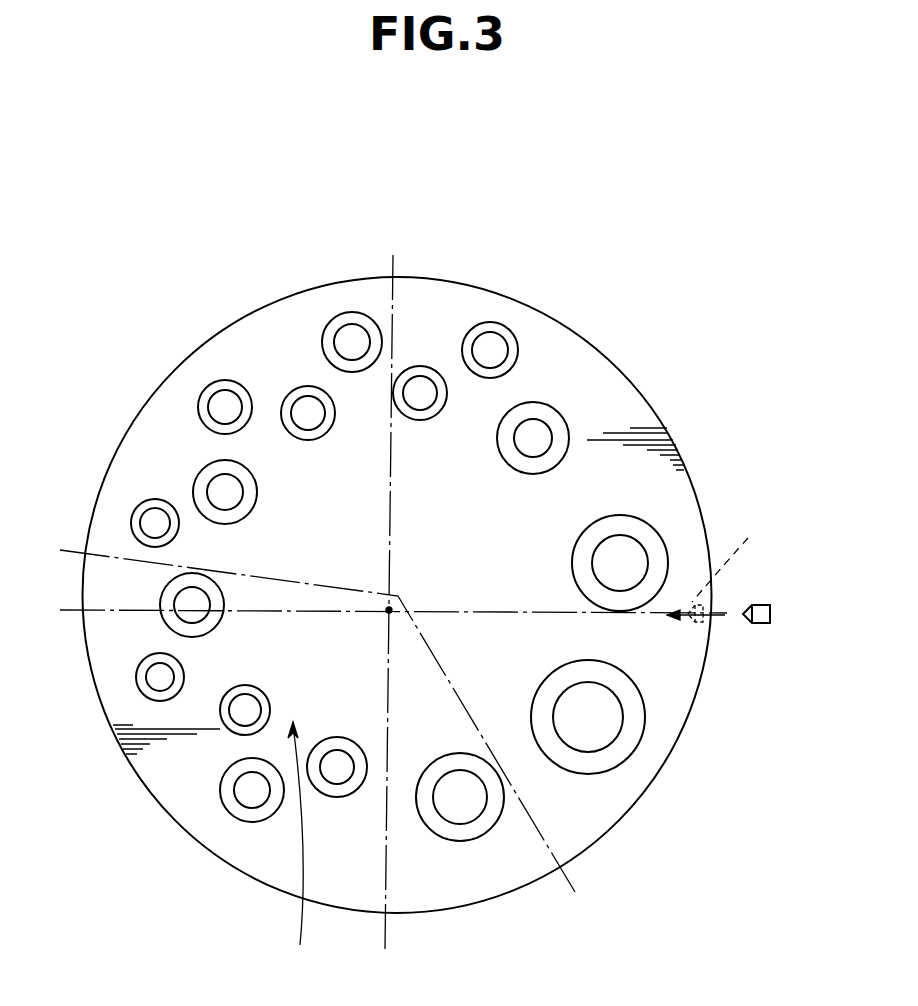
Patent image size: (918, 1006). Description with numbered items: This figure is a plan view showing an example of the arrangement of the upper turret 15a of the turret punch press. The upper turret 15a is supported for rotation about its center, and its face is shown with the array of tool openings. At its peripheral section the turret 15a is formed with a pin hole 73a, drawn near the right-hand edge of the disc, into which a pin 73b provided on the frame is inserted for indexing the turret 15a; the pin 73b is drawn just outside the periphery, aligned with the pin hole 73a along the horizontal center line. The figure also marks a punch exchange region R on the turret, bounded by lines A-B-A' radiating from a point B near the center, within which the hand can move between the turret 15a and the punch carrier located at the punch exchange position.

The upper turret 15a is at (606, 359).
The pin hole 73a is at (725, 565).
The pin 73b is at (757, 624).